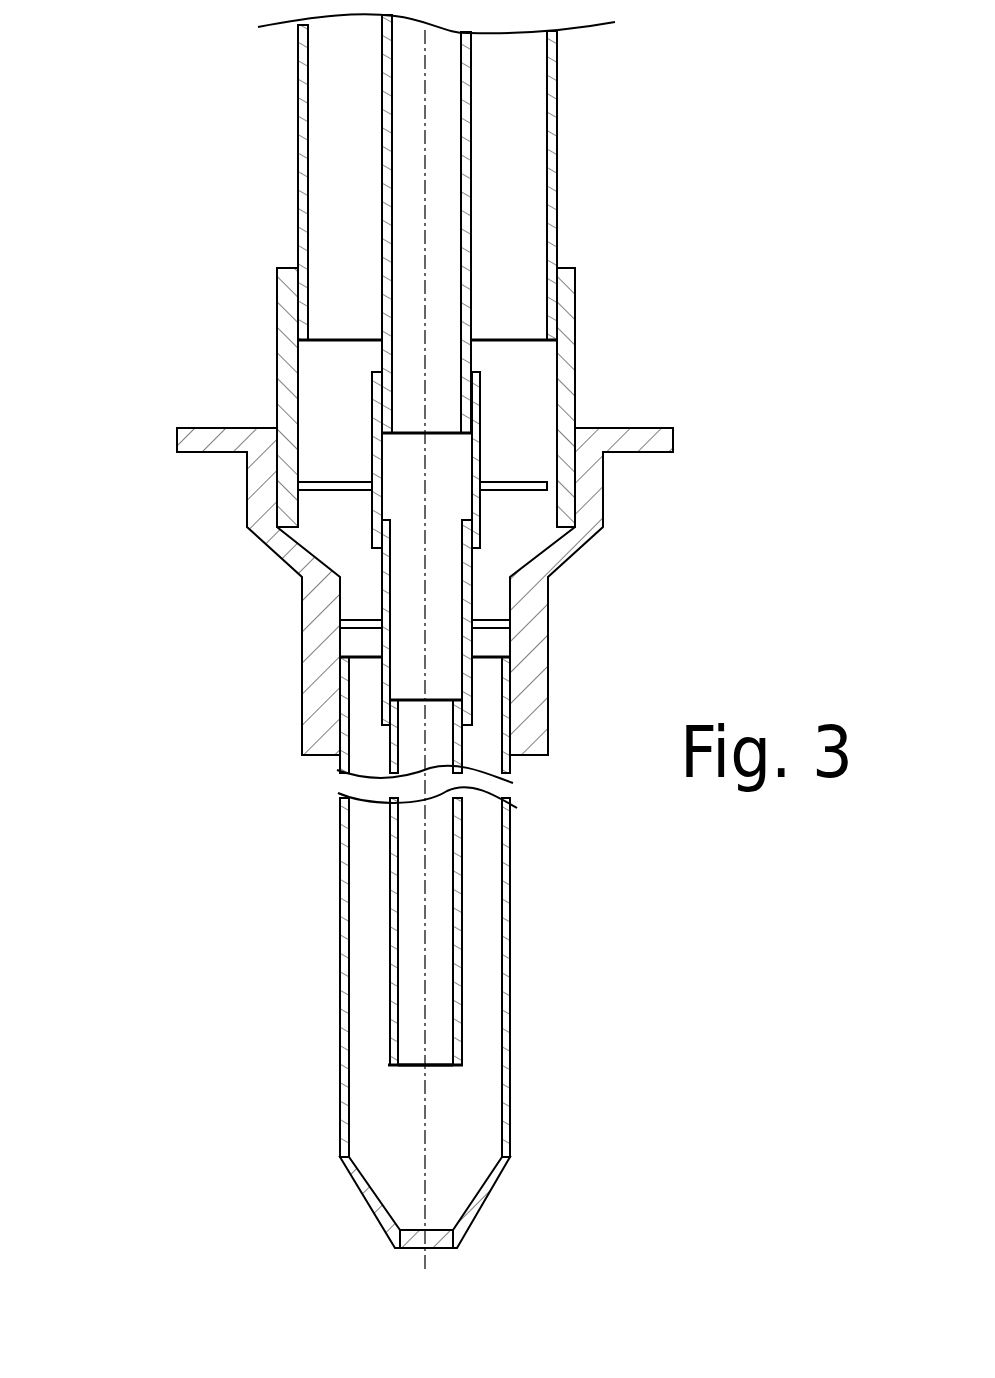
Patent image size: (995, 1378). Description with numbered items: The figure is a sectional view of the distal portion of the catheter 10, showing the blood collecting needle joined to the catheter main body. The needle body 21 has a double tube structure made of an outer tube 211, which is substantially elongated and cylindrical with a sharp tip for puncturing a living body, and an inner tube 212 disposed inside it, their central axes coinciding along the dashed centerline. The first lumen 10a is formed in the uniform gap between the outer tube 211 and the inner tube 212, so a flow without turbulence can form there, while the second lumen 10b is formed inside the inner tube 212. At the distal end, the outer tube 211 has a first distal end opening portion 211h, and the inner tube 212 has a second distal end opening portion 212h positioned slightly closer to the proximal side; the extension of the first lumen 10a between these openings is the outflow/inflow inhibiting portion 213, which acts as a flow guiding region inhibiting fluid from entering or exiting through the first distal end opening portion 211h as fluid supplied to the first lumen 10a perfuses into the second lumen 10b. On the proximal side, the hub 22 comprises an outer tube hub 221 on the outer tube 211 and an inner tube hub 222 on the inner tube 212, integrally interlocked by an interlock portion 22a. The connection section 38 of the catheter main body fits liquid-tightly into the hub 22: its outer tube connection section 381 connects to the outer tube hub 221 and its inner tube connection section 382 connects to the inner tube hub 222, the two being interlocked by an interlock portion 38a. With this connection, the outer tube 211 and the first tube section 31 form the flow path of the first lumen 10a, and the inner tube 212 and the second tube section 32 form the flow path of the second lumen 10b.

The catheter 10 is at (70, 51).
The first tube section 31 is at (553, 120).
The second tube section 32 is at (468, 190).
The connection section 38 is at (380, 408).
The outer tube connection section 381 is at (275, 300).
The inner tube connection section 382 is at (372, 388).
The interlock portion 38a is at (533, 485).
The hub 22 is at (461, 591).
The outer tube hub 221 is at (513, 577).
The inner tube hub 222 is at (470, 582).
The interlock portion 22a is at (510, 627).
The needle body 21 is at (450, 960).
The outer tube 211 is at (512, 938).
The inner tube 212 is at (455, 1000).
The outflow/inflow inhibiting portion 213 is at (430, 1163).
The first distal end opening portion 211h is at (430, 1247).
The second distal end opening portion 212h is at (413, 1067).
The first lumen 10a is at (370, 900).
The second lumen 10b is at (413, 980).